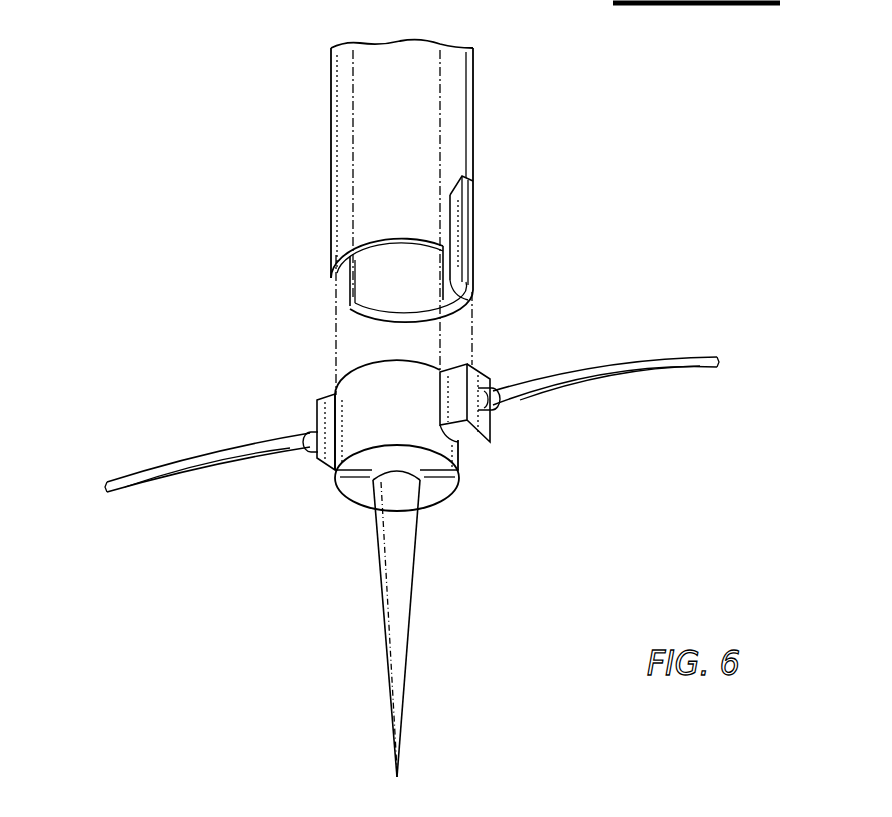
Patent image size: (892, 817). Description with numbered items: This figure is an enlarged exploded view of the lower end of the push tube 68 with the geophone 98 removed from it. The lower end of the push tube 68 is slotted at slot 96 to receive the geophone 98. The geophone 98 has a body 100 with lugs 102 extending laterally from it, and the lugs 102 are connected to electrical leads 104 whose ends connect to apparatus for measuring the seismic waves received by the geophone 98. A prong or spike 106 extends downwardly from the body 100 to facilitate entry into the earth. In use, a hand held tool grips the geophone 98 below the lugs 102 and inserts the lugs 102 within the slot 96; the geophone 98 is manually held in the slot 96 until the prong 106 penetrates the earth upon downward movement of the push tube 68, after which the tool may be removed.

The push tube 68 is at (473, 97).
The slot 96 is at (466, 228).
The geophone 98 is at (335, 493).
The body 100 is at (367, 378).
The lugs 102 is at (320, 412).
The electrical leads 104 is at (167, 488).
The prong or spike 106 is at (405, 628).